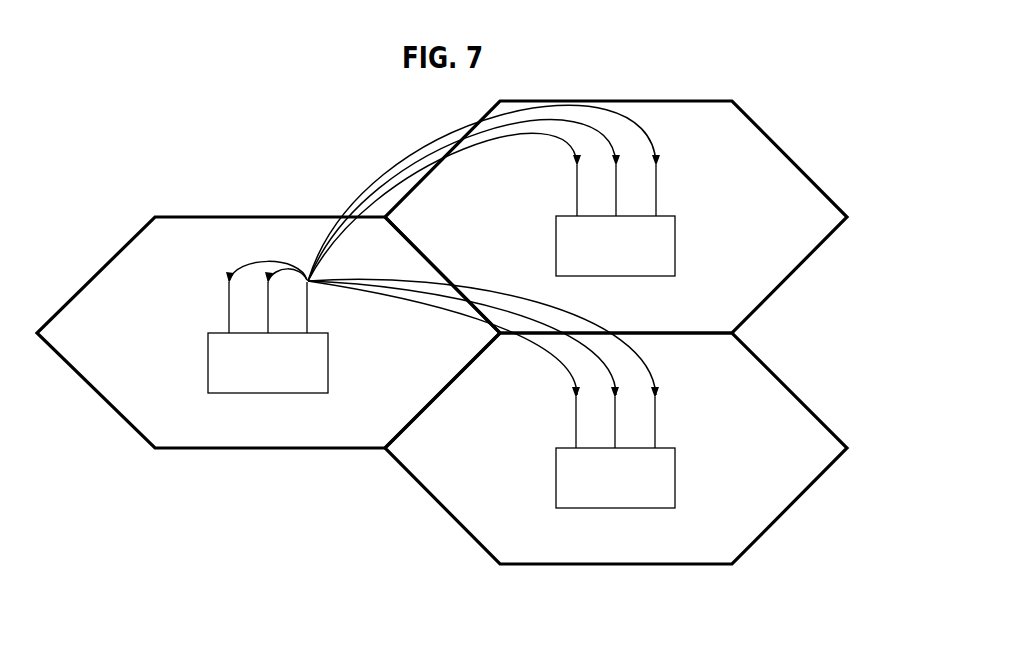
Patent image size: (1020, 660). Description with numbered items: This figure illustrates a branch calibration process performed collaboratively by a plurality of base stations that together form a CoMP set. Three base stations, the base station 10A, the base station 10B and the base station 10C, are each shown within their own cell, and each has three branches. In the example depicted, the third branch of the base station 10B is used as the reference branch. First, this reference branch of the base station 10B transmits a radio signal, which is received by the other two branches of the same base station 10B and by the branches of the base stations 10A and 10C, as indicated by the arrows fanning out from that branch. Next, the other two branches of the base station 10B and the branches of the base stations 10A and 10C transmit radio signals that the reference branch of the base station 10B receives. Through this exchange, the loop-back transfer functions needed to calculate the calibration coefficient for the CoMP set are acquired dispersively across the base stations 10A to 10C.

The base station 10A is at (676, 246).
The base station 10B is at (330, 362).
The base station 10C is at (676, 478).